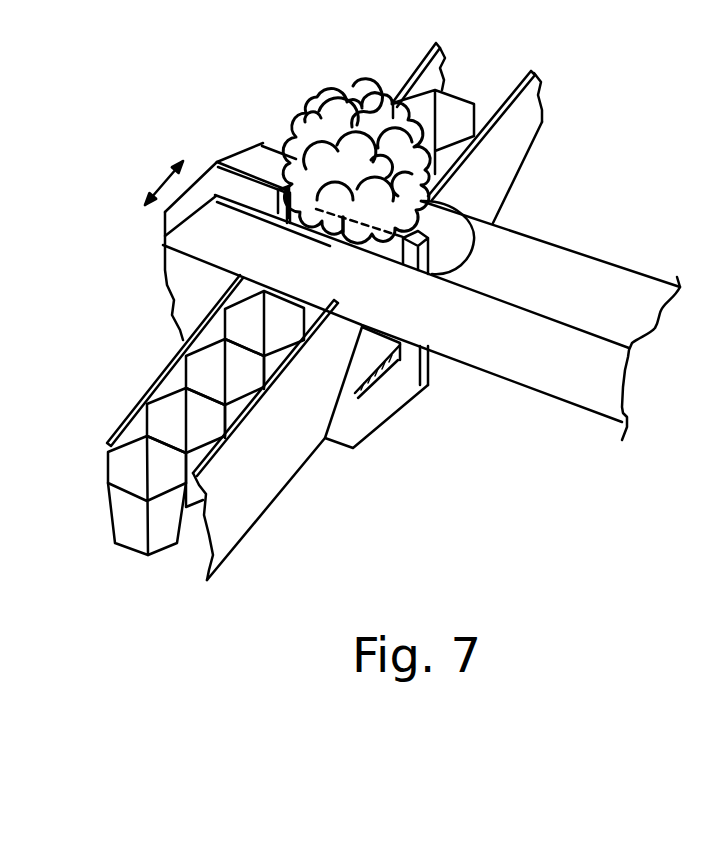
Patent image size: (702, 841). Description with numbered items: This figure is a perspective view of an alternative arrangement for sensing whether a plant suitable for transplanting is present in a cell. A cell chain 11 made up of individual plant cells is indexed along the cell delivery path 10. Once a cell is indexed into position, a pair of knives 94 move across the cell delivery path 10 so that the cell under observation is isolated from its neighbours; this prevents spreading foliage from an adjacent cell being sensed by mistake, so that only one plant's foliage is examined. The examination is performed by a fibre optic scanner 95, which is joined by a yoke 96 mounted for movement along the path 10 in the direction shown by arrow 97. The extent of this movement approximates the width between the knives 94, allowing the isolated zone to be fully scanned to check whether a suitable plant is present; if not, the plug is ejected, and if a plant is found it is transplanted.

The cell delivery path 10 is at (528, 148).
The cell chain 11 is at (172, 404).
The knives 94 is at (263, 146).
The fibre optic scanner 95 is at (215, 178).
The yoke 96 is at (388, 405).
The arrow 97 is at (162, 185).